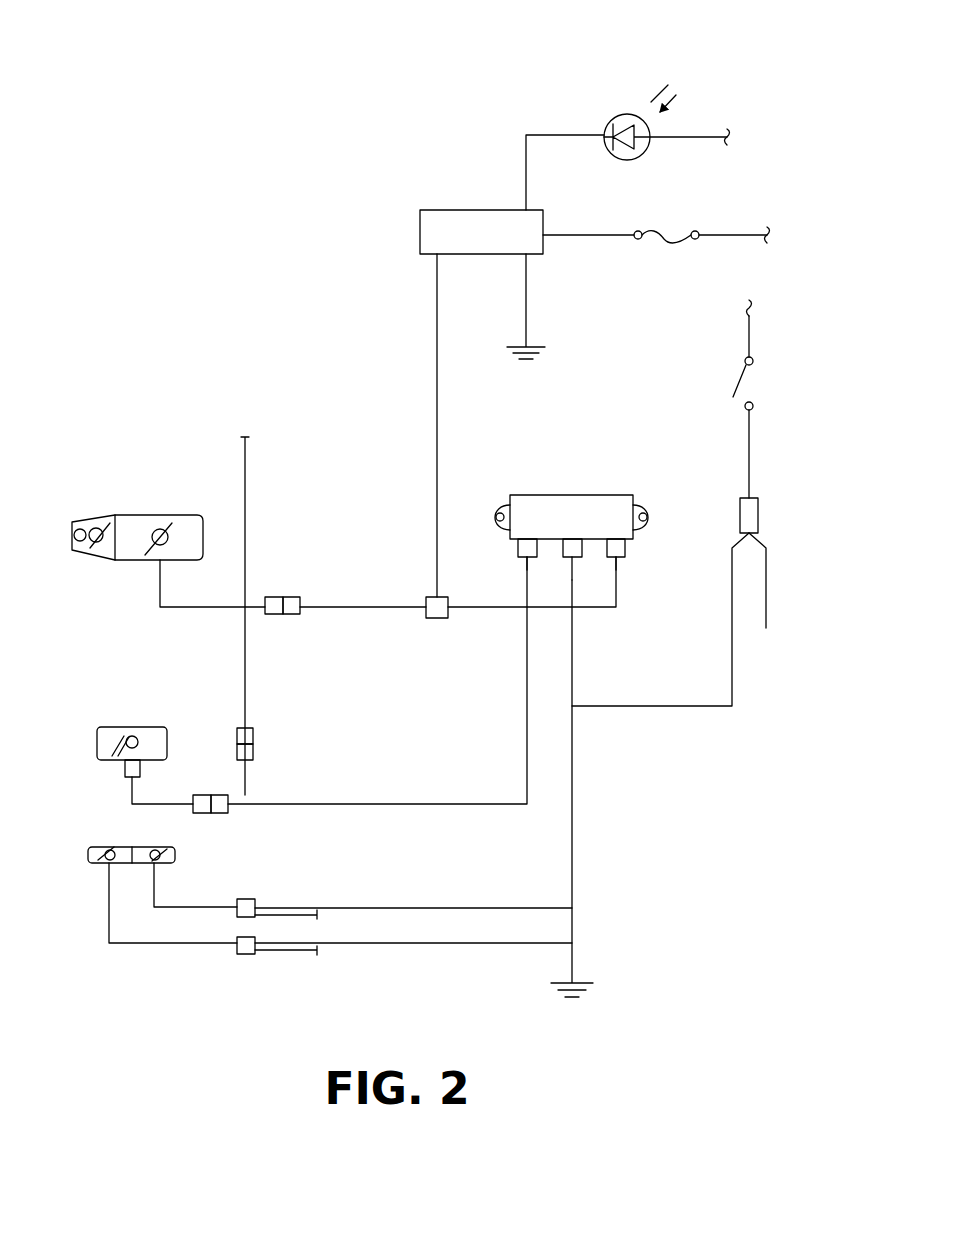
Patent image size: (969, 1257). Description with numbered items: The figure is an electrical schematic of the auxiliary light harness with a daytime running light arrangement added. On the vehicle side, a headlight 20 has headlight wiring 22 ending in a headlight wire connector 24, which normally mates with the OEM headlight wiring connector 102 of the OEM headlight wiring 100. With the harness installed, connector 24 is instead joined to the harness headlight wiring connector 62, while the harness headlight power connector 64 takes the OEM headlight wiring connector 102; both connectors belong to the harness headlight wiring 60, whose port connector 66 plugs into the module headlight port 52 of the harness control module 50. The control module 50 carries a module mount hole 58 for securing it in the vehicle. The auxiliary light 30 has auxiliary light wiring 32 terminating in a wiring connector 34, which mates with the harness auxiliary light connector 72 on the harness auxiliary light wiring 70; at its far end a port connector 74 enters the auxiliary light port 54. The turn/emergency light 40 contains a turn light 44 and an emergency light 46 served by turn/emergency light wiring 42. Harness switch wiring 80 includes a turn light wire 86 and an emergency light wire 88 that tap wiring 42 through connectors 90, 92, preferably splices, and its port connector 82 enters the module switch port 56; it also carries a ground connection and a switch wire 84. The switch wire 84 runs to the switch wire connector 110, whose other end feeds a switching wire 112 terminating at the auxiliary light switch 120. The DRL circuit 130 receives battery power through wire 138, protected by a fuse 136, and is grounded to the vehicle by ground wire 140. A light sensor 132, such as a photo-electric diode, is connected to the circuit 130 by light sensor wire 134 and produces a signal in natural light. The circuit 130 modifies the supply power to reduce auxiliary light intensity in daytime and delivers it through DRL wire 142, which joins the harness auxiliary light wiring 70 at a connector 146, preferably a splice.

The headlight 20 is at (108, 728).
The headlight wiring 22 is at (132, 790).
The headlight wire connector 24 is at (198, 795).
The auxiliary light 30 is at (143, 515).
The auxiliary light wiring 32 is at (157, 596).
The wiring connector 34 is at (275, 597).
The turn/emergency light 40 is at (127, 838).
The turn/emergency light wiring 42 is at (157, 943).
The turn light 44 is at (88, 853).
The emergency light 46 is at (162, 849).
The harness control module 50 is at (551, 495).
The module headlight port 52 is at (516, 536).
The auxiliary light port 54 is at (617, 538).
The module switch port 56 is at (572, 543).
The module mount hole 58 is at (500, 513).
The harness headlight wiring 60 is at (440, 804).
The harness headlight wiring connector 62 is at (220, 795).
The harness headlight power connector 64 is at (253, 752).
The port connector 66 is at (527, 560).
The harness auxiliary light wiring 70 is at (340, 606).
The harness auxiliary light connector 72 is at (293, 597).
The port connector 74 is at (620, 558).
The harness switch wiring 80 is at (574, 662).
The port connector 82 is at (575, 558).
The switch wire 84 is at (732, 672).
The turn light wire 86 is at (420, 945).
The emergency light wire 88 is at (393, 905).
The connector 90 is at (247, 954).
The connector 92 is at (247, 899).
The OEM headlight wiring 100 is at (245, 455).
The OEM headlight wiring connector 102 is at (253, 737).
The switch wire connector 110 is at (751, 505).
The switching wire 112 is at (751, 435).
The auxiliary light switch 120 is at (753, 366).
The DRL circuit 130 is at (445, 210).
The light sensor 132 is at (613, 113).
The light sensor wire 134 is at (546, 135).
The fuse 136 is at (653, 228).
The wire 138 is at (728, 235).
The ground wire 140 is at (526, 298).
The DRL wire 142 is at (437, 380).
The connector 146 is at (432, 618).